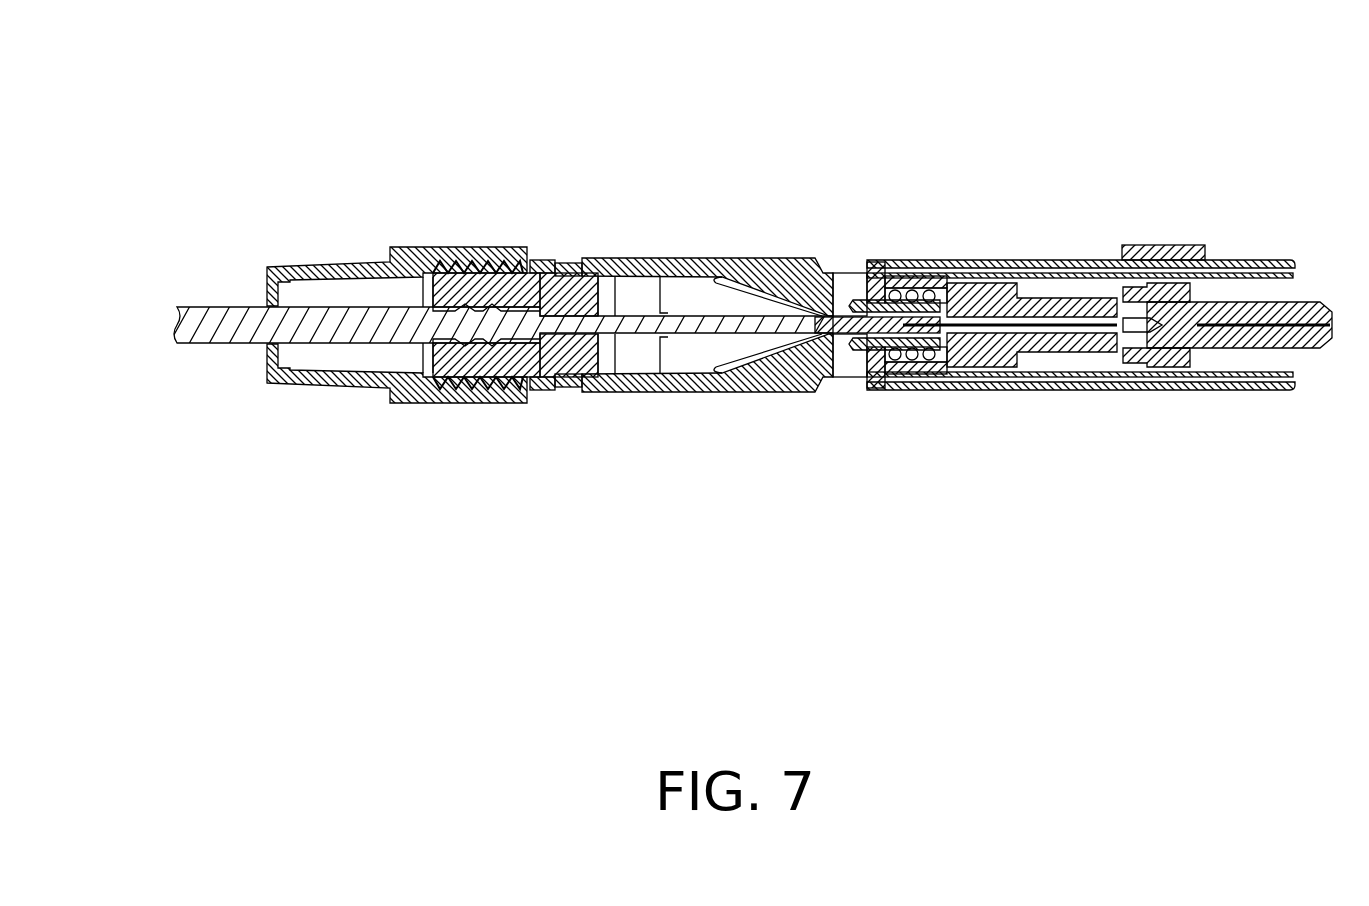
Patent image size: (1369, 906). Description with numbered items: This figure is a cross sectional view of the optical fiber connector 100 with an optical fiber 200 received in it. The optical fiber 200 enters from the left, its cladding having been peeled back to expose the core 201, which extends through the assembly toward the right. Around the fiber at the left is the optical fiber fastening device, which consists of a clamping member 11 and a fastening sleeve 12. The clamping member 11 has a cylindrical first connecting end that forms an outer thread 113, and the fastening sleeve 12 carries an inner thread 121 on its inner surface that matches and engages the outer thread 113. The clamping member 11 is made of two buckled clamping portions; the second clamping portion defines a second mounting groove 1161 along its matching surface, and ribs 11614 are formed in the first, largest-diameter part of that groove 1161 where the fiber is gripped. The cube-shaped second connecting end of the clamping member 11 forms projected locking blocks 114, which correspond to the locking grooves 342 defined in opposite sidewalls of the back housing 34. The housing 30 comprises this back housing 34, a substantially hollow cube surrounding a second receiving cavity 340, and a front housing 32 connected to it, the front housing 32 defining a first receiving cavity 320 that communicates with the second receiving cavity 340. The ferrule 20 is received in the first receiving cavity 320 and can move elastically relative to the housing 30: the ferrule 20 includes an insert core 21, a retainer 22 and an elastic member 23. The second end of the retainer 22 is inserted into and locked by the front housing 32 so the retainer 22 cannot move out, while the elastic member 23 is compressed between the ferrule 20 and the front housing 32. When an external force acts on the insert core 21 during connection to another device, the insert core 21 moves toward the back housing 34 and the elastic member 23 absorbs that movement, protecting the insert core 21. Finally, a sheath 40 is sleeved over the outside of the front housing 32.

The optical fiber connector 100 is at (645, 61).
The optical fiber 200 is at (212, 320).
The fastening sleeve 12 is at (397, 394).
The inner thread 121 is at (430, 380).
The outer thread 113 is at (482, 375).
The ribs 11614 is at (443, 277).
The second mounting groove 1161 is at (505, 300).
The clamping member 11 is at (565, 350).
The locking blocks 114 is at (563, 272).
The locking grooves 342 is at (575, 263).
The housing 30 is at (898, 172).
The back housing 34 is at (720, 258).
The second receiving cavity 340 is at (690, 350).
The front housing 32 is at (893, 277).
The core 201 is at (963, 340).
The ferrule 20 is at (1288, 172).
The elastic member 23 is at (940, 285).
The retainer 22 is at (1143, 262).
The insert core 21 is at (1293, 310).
The first receiving cavity 320 is at (1210, 362).
The sheath 40 is at (1290, 390).